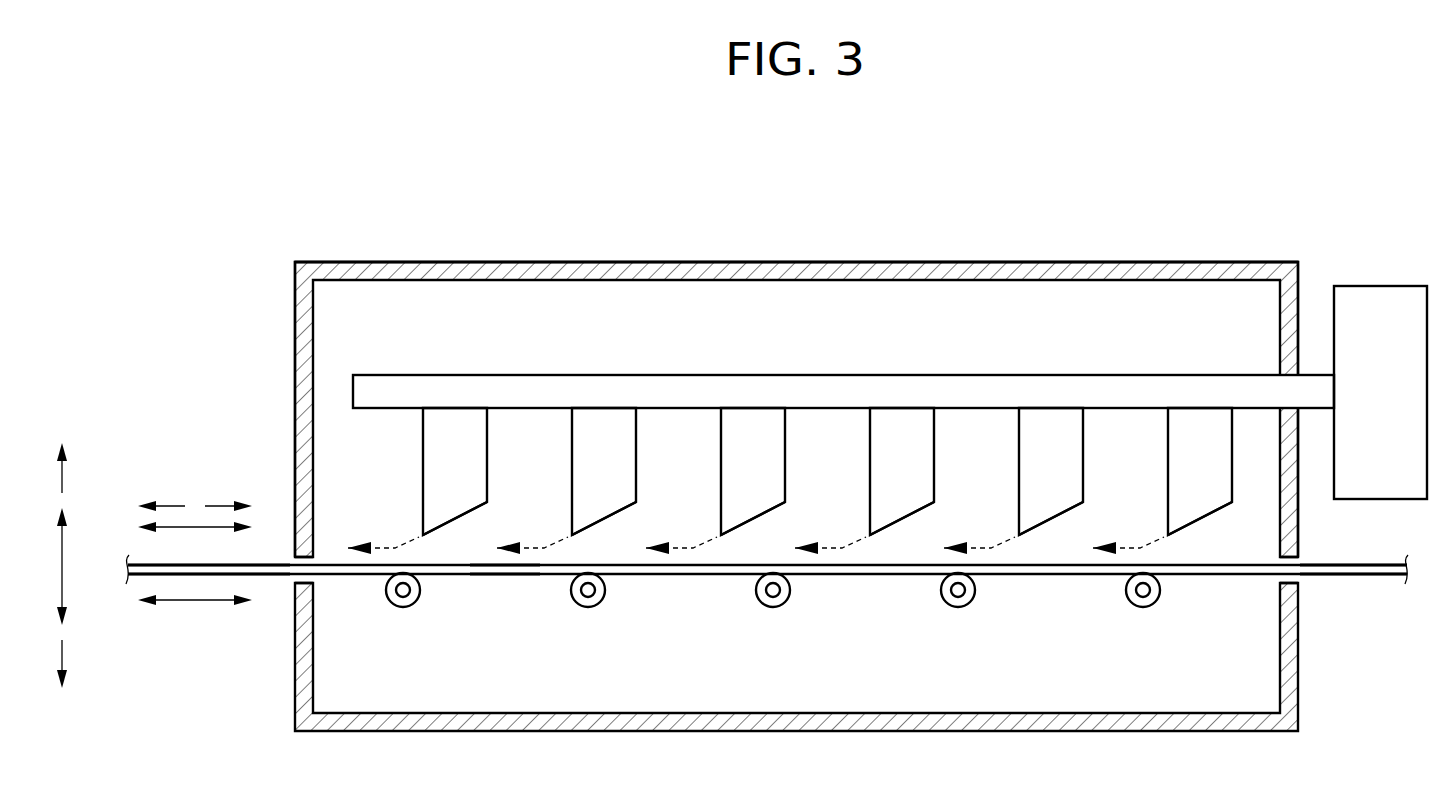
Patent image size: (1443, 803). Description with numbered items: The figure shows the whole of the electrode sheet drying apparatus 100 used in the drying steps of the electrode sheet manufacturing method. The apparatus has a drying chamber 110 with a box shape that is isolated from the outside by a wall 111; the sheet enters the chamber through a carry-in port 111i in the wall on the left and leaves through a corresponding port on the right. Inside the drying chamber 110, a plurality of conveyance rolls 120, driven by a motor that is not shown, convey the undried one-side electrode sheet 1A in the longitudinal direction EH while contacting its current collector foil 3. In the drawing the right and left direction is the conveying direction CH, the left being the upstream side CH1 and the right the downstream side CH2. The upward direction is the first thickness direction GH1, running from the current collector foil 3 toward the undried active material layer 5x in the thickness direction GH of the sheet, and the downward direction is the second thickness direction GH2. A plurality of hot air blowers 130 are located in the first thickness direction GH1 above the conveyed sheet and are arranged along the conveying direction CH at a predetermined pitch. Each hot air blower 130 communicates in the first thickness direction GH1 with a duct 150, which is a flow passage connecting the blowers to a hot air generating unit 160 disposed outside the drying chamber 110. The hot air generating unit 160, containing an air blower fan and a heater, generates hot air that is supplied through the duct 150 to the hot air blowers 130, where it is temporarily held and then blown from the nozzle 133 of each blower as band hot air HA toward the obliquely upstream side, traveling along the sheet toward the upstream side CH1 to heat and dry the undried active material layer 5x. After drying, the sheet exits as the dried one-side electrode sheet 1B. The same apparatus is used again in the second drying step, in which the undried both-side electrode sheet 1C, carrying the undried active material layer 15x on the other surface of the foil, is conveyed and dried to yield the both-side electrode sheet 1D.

The electrode sheet drying apparatus 100 is at (1010, 230).
The drying chamber 110 is at (528, 265).
The wall 111 is at (633, 268).
The carry-in port 111i is at (293, 558).
The duct 150 is at (810, 387).
The hot air generating unit 160 is at (1404, 407).
The hot air blower 130 is at (423, 447).
The nozzle 133 is at (450, 525).
The band hot air HA is at (411, 530).
The conveyance roll 120 is at (403, 608).
The current collector foil 3 is at (457, 575).
The undried active material layer 5x is at (477, 565).
The undried active material layer 15x is at (506, 632).
The undried one-side electrode sheet 1A is at (282, 576).
The undried both-side electrode sheet 1C is at (209, 634).
The dried one-side electrode sheet 1B is at (1342, 576).
The both-side electrode sheet 1D is at (1353, 617).
The conveying direction CH is at (195, 539).
The upstream side CH1 is at (162, 490).
The downstream side CH2 is at (228, 490).
The longitudinal direction EH is at (195, 613).
The thickness direction GH is at (76, 566).
The first thickness direction GH1 is at (81, 469).
The second thickness direction GH2 is at (81, 662).